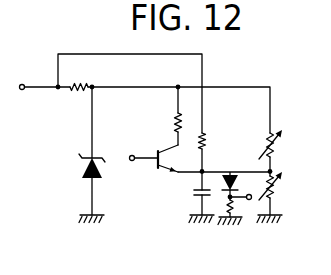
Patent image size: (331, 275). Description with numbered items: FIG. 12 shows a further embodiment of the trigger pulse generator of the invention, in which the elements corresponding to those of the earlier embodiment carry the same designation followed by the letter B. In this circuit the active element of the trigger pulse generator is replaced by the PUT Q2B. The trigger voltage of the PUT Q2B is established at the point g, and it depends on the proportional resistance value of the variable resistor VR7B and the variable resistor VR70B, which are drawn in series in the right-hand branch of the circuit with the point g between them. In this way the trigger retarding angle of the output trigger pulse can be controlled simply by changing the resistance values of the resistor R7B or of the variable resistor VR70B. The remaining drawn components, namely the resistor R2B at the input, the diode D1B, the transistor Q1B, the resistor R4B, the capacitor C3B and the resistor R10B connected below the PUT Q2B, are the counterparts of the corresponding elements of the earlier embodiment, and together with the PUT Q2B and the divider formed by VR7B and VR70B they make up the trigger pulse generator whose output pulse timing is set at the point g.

The resistor R2B is at (82, 77).
The zener diode D1B is at (107, 169).
The transistor Q1B is at (154, 171).
The resistor R4B is at (158, 123).
The resistor R7B is at (219, 143).
The capacitor C3B is at (188, 203).
The PUT Q2B is at (242, 173).
The point g is at (278, 164).
The variable resistor VR7B is at (290, 146).
The variable resistor VR70B is at (295, 186).
The resistor R10B is at (228, 203).